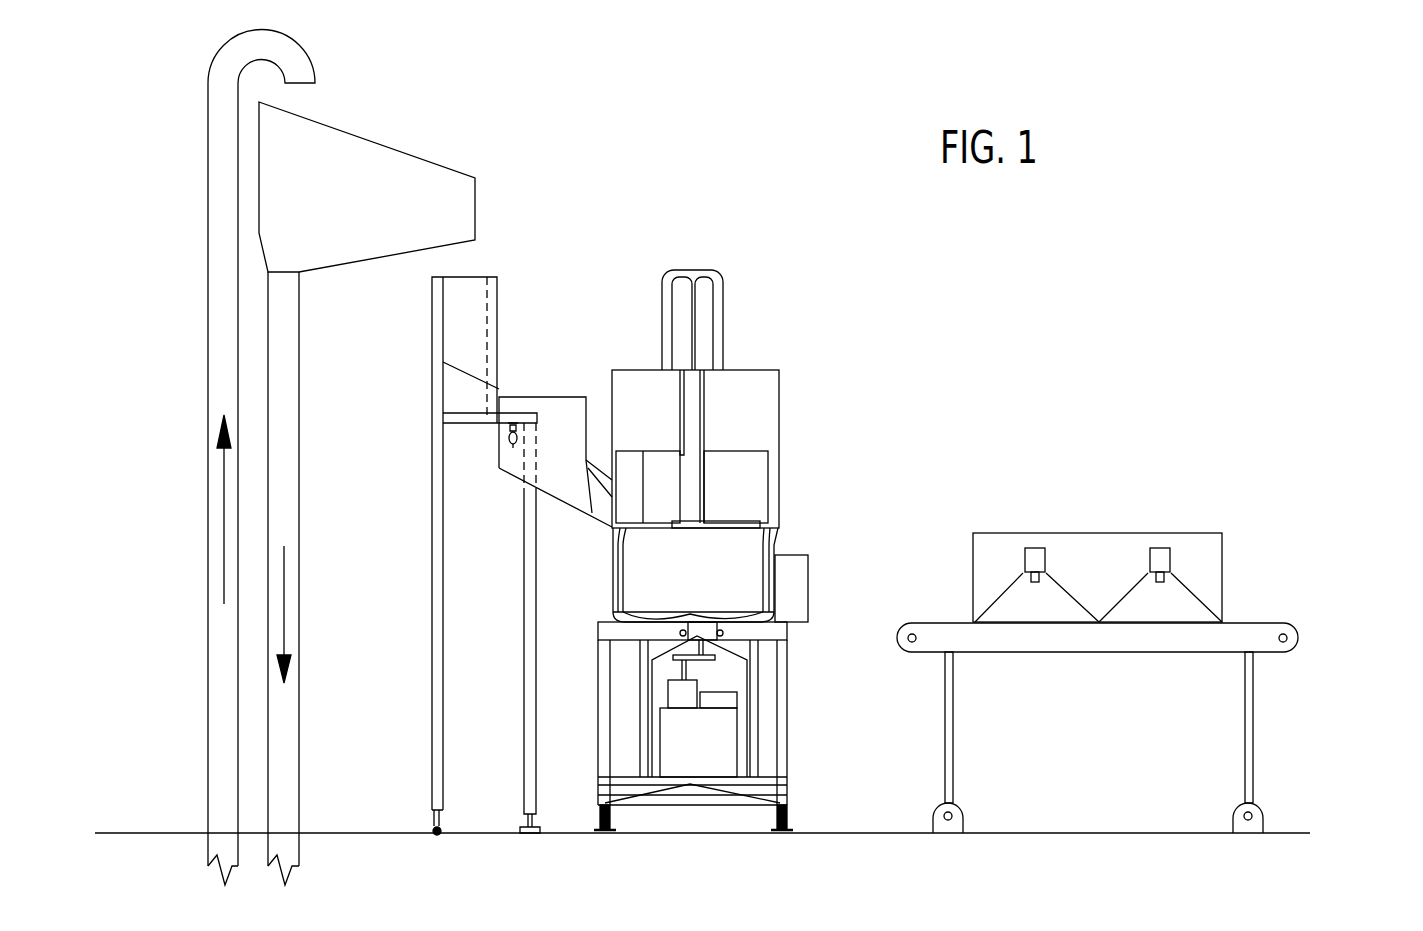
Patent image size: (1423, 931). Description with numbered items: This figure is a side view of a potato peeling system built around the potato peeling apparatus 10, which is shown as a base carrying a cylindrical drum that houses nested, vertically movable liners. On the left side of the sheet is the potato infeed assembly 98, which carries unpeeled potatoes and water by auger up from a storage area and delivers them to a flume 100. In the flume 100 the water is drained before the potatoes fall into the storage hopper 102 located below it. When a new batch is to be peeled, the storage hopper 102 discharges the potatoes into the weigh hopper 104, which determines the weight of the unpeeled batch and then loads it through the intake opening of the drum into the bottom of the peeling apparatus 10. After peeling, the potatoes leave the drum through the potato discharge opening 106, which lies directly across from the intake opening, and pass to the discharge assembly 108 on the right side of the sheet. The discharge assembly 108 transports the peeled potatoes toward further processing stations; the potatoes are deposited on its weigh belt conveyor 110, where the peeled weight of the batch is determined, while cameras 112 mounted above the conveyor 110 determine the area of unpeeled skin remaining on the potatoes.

The potato peeling apparatus 10 is at (822, 388).
The potato infeed assembly 98 is at (540, 232).
The flume 100 is at (403, 148).
The storage hopper 102 is at (470, 314).
The weigh hopper 104 is at (577, 400).
The potato discharge opening 106 is at (800, 577).
The discharge assembly 108 is at (1290, 538).
The weigh belt conveyor 110 is at (1005, 653).
The cameras 112 is at (1038, 559).